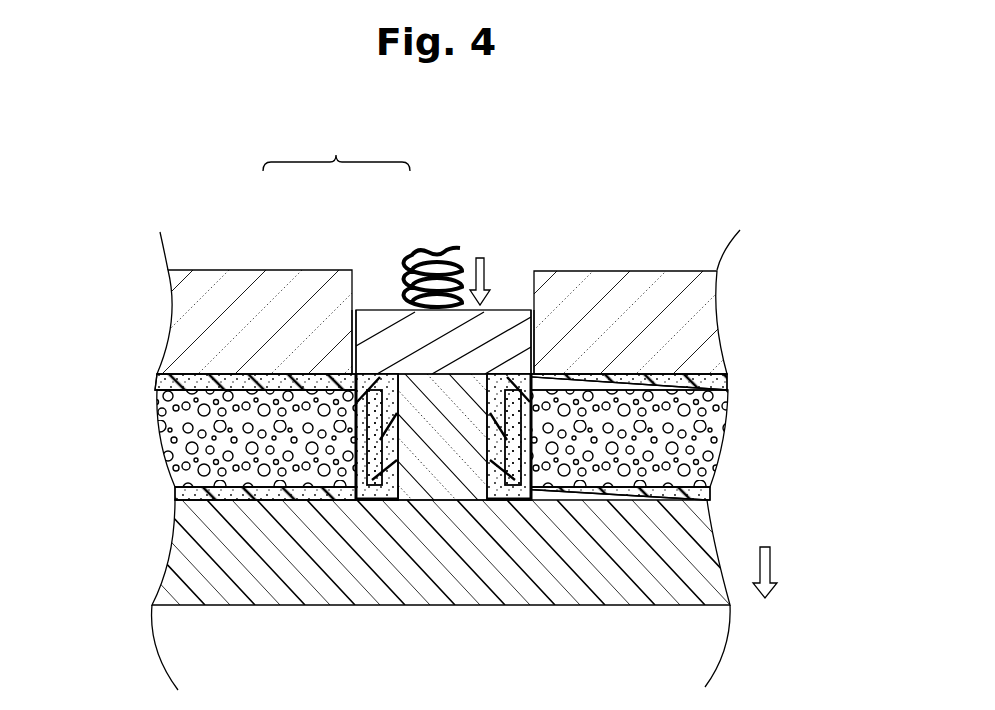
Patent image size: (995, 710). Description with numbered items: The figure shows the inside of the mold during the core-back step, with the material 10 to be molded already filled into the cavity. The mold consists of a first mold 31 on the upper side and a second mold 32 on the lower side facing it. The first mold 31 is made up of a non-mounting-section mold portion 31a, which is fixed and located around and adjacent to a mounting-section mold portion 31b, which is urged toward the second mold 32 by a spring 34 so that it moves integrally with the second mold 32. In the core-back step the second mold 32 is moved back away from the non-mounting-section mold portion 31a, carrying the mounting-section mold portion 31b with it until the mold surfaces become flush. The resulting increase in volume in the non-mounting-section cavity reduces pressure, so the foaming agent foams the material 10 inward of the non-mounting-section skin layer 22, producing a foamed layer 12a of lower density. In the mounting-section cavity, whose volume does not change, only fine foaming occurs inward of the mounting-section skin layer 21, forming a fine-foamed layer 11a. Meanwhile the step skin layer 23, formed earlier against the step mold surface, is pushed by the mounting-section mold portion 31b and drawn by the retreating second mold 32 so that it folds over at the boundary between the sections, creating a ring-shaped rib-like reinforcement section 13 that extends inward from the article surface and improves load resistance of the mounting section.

The material to be molded 10 is at (173, 478).
The fine-foamed layer 11a is at (380, 500).
The foamed layer 12a is at (160, 410).
The reinforcement section 13 is at (340, 365).
The mounting-section skin layer 21 is at (375, 335).
The non-mounting-section skin layer 22 is at (203, 378).
The step skin layer 23 is at (313, 503).
The first mold 31 is at (451, 245).
The non-mounting-section mold portion 31a is at (257, 268).
The mounting-section mold portion 31b is at (397, 318).
The second mold 32 is at (175, 545).
The spring 34 is at (442, 252).